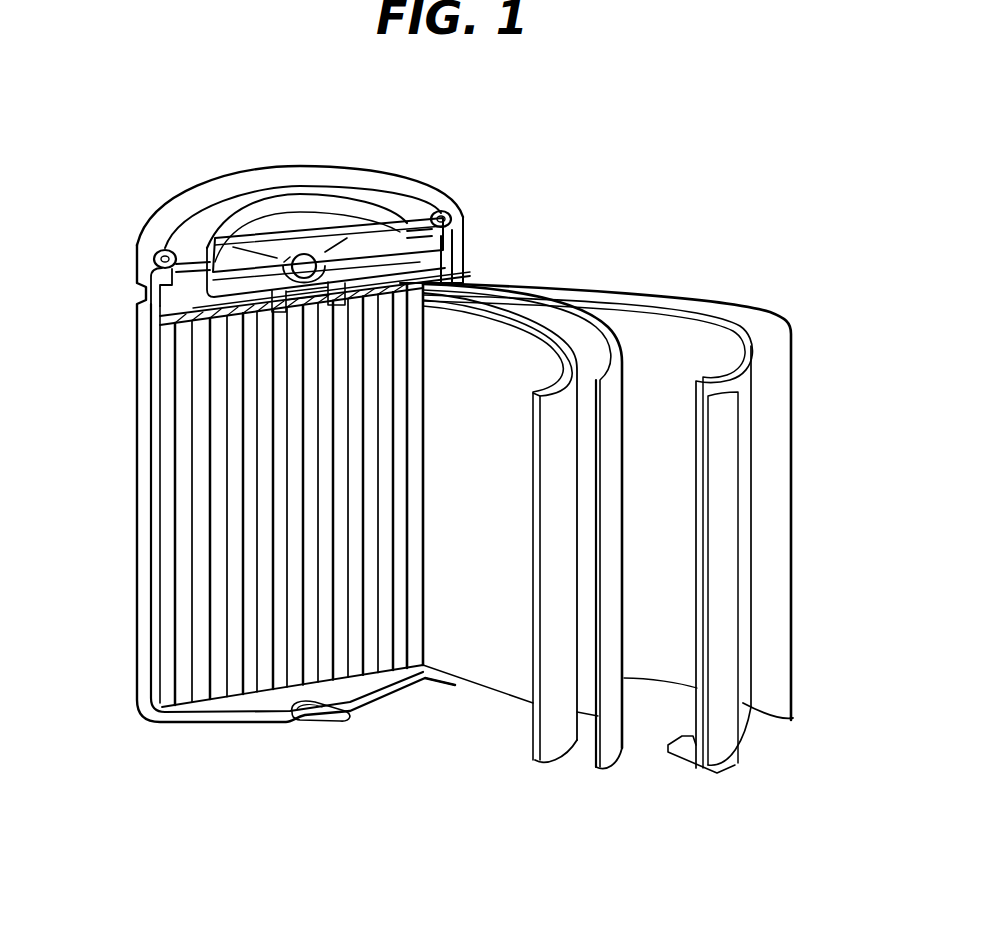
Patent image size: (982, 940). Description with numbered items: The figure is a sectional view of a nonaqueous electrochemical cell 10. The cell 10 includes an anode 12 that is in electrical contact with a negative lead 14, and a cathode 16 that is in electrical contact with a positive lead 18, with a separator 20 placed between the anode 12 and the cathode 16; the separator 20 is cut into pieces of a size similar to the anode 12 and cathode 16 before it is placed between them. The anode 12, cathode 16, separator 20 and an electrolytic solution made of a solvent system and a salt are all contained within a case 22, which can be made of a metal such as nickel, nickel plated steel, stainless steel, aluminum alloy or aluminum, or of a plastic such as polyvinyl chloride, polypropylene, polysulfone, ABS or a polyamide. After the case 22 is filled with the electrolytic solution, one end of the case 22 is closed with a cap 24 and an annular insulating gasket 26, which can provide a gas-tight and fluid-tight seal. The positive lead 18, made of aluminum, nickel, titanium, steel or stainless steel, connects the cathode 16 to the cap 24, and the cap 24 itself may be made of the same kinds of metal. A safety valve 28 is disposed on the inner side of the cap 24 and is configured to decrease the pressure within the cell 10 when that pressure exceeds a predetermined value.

The electrochemical cell 10 is at (675, 160).
The anode 12 is at (753, 709).
The negative lead 14 is at (727, 757).
The cathode 16 is at (561, 756).
The positive lead 18 is at (330, 268).
The separator 20 is at (628, 378).
The case 22 is at (154, 733).
The cap 24 is at (292, 206).
The annular insulating gasket 26 is at (147, 256).
The safety valve 28 is at (374, 237).